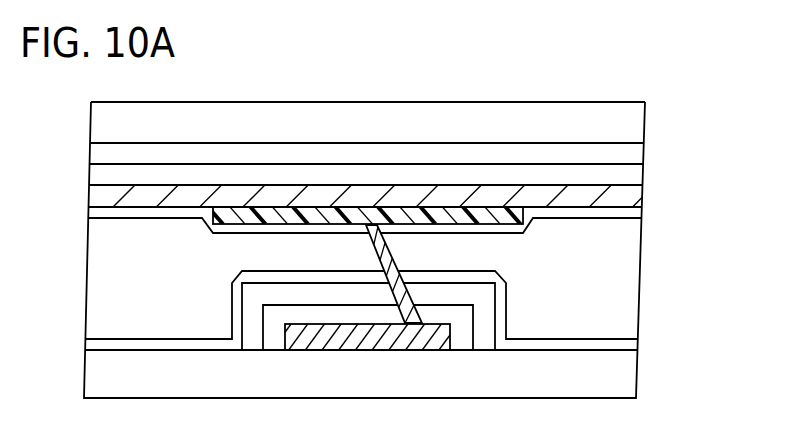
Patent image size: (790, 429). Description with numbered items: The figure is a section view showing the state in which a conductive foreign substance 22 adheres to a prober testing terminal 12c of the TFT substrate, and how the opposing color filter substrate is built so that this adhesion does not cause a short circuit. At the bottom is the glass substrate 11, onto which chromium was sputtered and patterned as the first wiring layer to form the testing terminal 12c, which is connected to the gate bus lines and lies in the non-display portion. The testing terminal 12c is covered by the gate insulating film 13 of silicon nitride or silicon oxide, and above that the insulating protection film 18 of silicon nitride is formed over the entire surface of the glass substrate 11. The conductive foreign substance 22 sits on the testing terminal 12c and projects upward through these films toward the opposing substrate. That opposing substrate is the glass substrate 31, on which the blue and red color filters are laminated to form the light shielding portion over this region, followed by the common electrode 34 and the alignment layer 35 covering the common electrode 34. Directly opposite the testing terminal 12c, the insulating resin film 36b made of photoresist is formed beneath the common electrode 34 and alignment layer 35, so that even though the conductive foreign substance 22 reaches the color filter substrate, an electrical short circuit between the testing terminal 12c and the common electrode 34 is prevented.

The glass substrate 31 is at (635, 117).
The common electrode 34 is at (638, 203).
The alignment layer 35 is at (155, 215).
The insulating resin film 36b is at (525, 223).
The conductive foreign substance 22 is at (393, 252).
The insulating film (protection film) 18 is at (485, 290).
The insulating film (gate insulating film) 13 is at (465, 322).
The testing terminal 12c is at (408, 342).
The glass substrate 11 is at (630, 381).